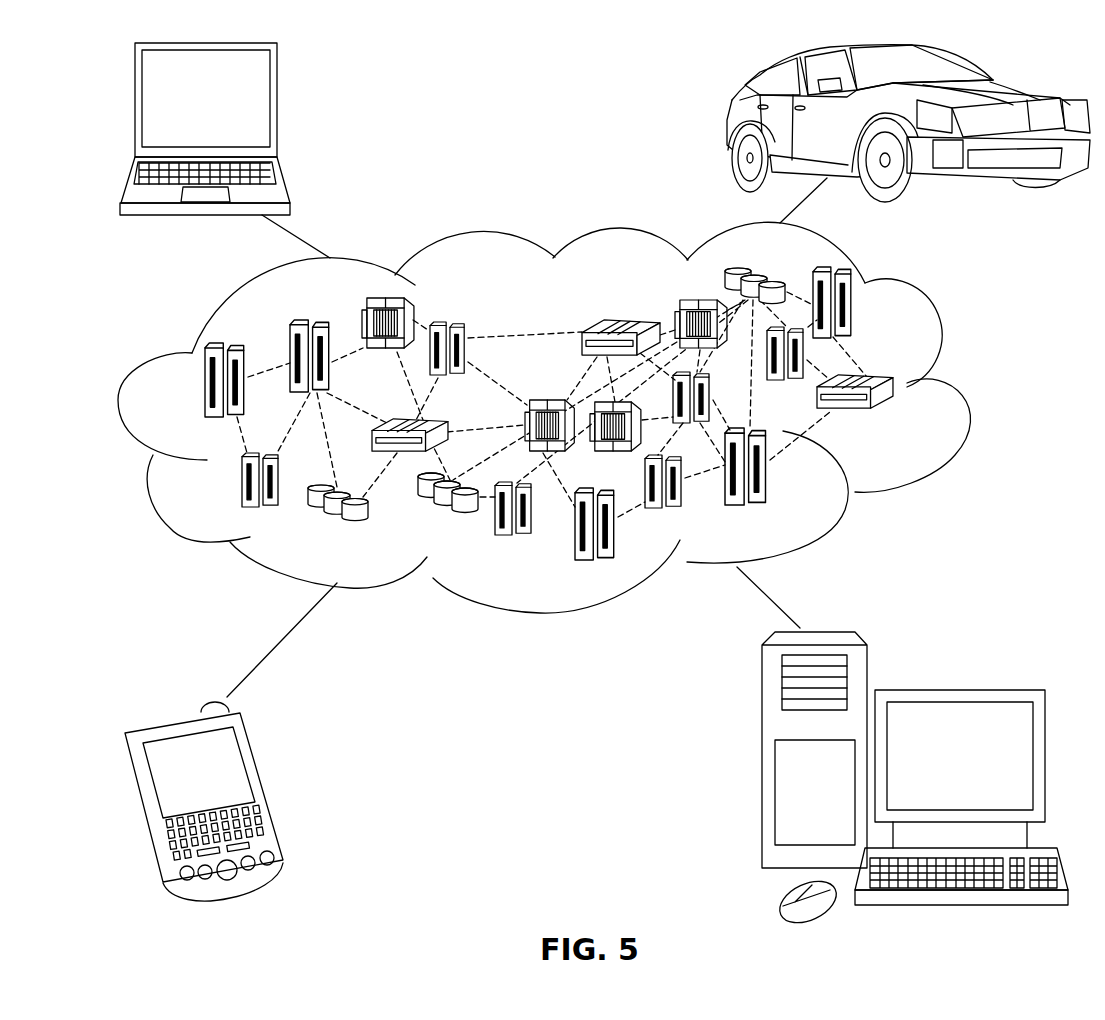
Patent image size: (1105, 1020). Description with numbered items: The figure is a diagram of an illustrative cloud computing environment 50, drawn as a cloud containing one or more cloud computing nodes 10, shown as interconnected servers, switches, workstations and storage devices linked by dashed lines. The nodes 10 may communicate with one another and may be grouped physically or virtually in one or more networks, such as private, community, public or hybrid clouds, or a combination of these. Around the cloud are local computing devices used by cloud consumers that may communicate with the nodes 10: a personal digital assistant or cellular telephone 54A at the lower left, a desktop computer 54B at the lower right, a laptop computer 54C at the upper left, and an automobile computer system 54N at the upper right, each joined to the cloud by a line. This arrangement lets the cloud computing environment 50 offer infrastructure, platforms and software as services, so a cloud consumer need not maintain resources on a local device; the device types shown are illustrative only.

The cloud computing nodes 10 is at (897, 420).
The cloud computing environment 50 is at (968, 388).
The personal digital assistant or cellular telephone 54A is at (263, 789).
The desktop computer 54B is at (957, 690).
The laptop computer 54C is at (277, 107).
The automobile computer system 54N is at (730, 122).